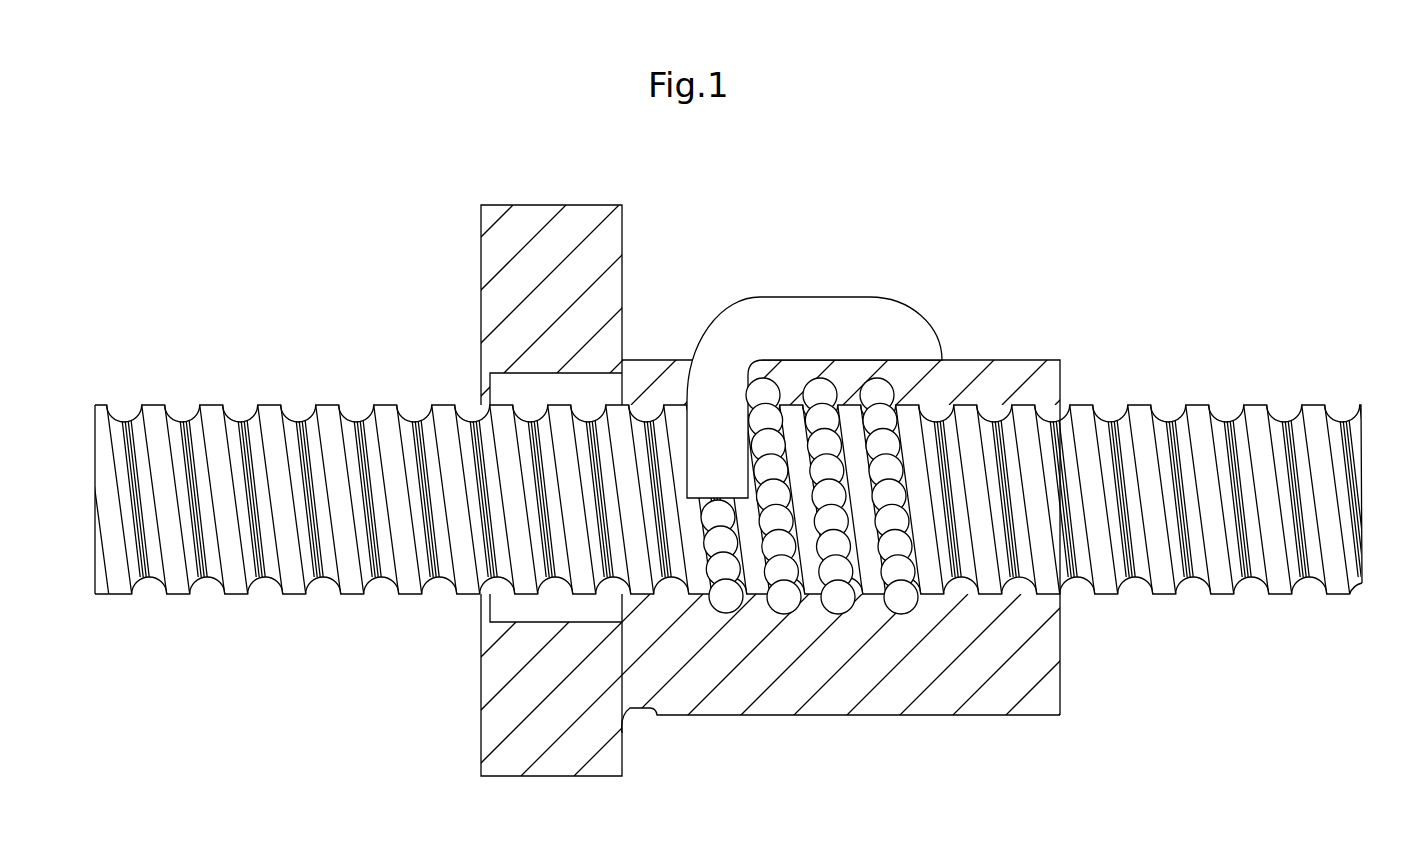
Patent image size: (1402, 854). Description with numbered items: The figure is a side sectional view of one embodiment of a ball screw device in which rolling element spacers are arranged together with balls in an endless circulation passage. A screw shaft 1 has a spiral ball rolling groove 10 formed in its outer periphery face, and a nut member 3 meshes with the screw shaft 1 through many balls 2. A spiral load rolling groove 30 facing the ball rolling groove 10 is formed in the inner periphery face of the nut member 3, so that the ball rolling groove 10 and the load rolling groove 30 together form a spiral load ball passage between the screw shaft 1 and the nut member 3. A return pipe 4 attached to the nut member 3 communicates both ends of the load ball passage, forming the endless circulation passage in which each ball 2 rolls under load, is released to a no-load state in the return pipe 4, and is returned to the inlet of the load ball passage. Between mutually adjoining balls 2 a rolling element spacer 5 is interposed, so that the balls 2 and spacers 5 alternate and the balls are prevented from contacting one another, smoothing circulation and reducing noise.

The screw shaft 1 is at (304, 392).
The ball rolling groove 10 is at (252, 578).
The ball 2 is at (842, 545).
The nut member 3 is at (1008, 336).
The load rolling groove 30 is at (905, 607).
The return pipe 4 is at (783, 305).
The rolling element spacer 5 is at (893, 473).